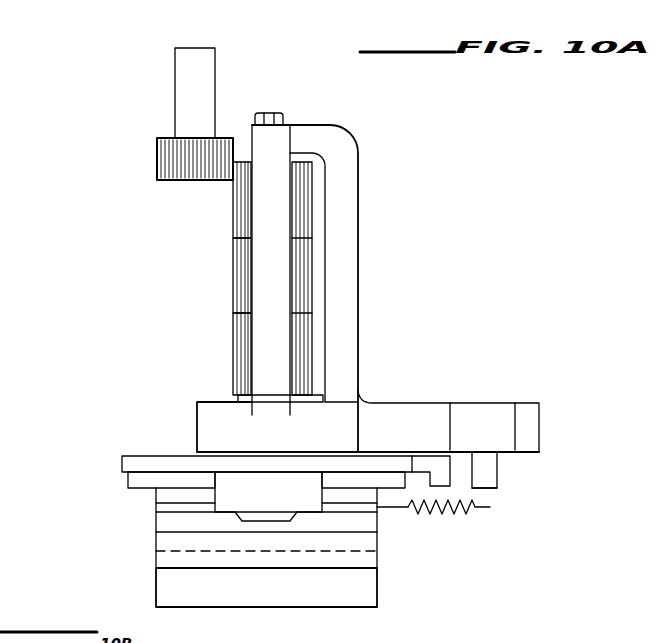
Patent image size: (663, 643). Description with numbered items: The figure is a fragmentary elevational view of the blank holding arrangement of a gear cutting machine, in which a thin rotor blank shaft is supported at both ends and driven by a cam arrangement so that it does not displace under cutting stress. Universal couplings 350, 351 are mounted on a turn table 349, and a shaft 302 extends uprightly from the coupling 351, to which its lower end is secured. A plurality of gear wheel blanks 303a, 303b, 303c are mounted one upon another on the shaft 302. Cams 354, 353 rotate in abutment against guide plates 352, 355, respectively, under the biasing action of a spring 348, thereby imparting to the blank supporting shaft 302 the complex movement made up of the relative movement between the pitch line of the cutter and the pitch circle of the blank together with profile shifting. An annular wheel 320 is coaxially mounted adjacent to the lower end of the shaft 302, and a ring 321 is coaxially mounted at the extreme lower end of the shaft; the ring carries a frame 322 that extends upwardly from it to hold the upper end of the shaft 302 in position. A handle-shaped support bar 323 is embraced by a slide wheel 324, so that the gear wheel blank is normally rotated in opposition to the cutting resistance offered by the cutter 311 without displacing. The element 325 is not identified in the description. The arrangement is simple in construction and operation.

The shaft 302 is at (281, 113).
The cutter 311 is at (156, 166).
The gear wheel blank 303a is at (230, 215).
The gear wheel blank 303b is at (230, 292).
The gear wheel blank 303c is at (230, 348).
The annular wheel 320 is at (237, 396).
The ring 321 is at (197, 423).
The frame 322 is at (358, 195).
The handle-shaped support bar 323 is at (522, 403).
The slide wheel 324 is at (498, 453).
The stop surface 325 is at (498, 488).
The spring 348 is at (448, 517).
The turn table 349 is at (377, 598).
The universal coupling 350 is at (377, 562).
The universal coupling 351 is at (377, 528).
The guide plate 352 is at (236, 512).
The cam 353 is at (128, 478).
The cam 354 is at (122, 460).
The guide plate 355 is at (490, 508).